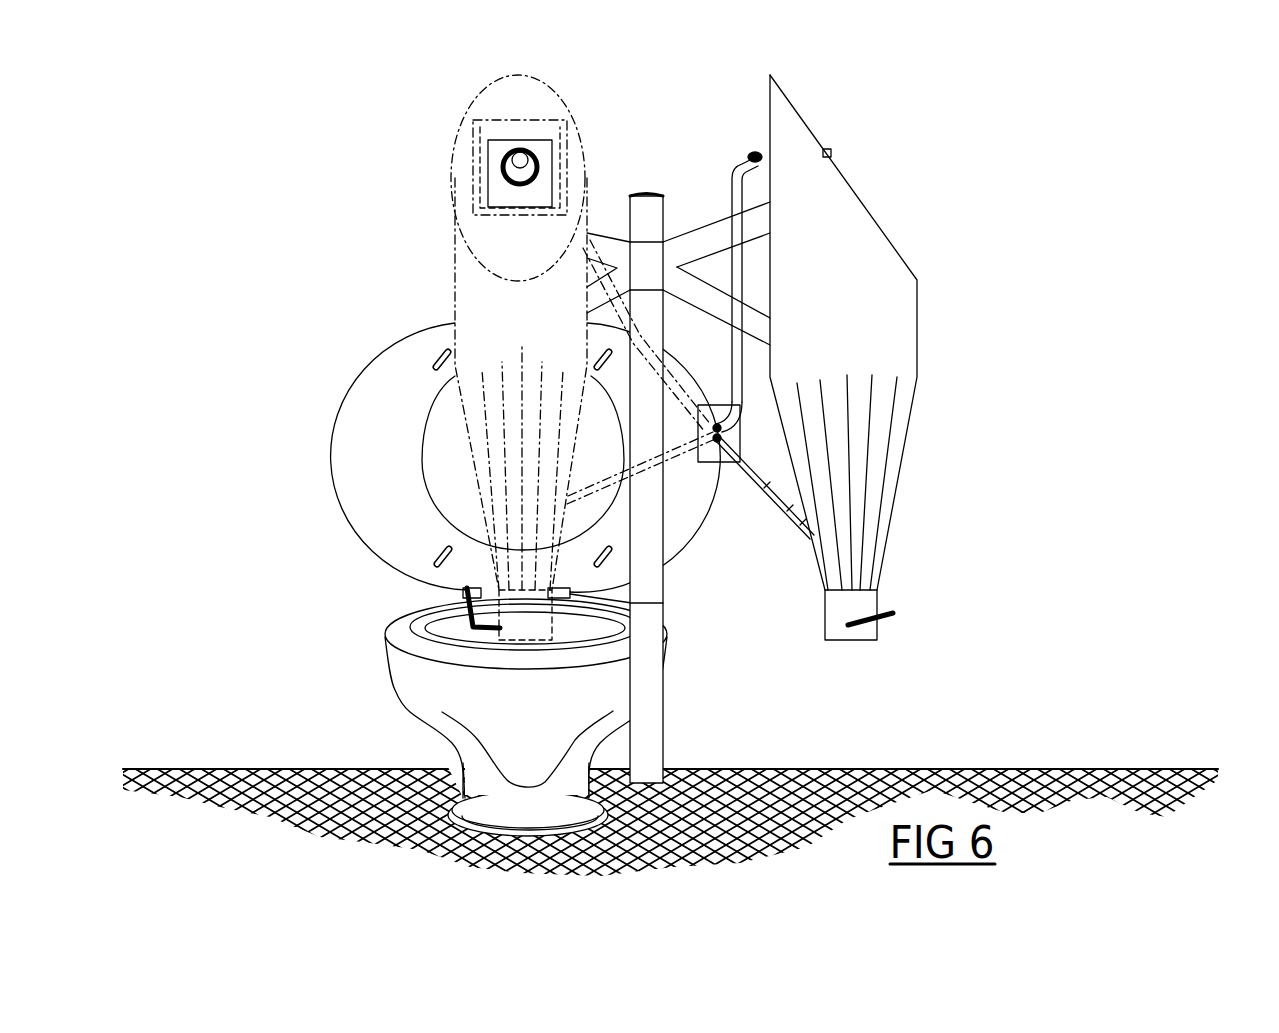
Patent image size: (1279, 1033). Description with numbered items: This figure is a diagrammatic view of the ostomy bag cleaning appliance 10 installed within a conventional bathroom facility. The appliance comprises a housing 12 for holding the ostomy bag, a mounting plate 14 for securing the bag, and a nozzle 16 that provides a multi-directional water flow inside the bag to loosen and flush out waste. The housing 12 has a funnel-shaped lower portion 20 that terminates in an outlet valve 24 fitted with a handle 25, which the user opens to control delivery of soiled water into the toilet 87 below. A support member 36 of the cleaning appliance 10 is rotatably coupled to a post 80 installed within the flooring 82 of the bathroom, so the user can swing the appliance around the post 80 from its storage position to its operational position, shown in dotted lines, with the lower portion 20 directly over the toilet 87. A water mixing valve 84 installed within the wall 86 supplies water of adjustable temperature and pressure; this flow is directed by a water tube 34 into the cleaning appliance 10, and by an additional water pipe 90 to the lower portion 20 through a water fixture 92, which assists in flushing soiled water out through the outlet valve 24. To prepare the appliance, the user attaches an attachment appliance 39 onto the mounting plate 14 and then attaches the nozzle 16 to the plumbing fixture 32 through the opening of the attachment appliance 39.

The ostomy bag cleaning appliance 10 is at (420, 142).
The housing 12 is at (928, 220).
The mounting plate 14 is at (515, 213).
The nozzle 16 is at (520, 128).
The funnel-shaped lower portion 20 is at (468, 447).
The outlet valve 24 is at (552, 603).
The handle 25 is at (467, 590).
The plumbing fixture 32 is at (755, 150).
The water tube 34 is at (732, 172).
The support member 36 is at (593, 233).
The attachment appliance 39 is at (498, 193).
The post 80 is at (645, 195).
The flooring 82 is at (750, 768).
The water mixing valve 84 is at (712, 405).
The wall 86 is at (1127, 118).
The toilet 87 is at (370, 513).
The additional water pipe 90 is at (643, 473).
The water fixture 92 is at (802, 527).